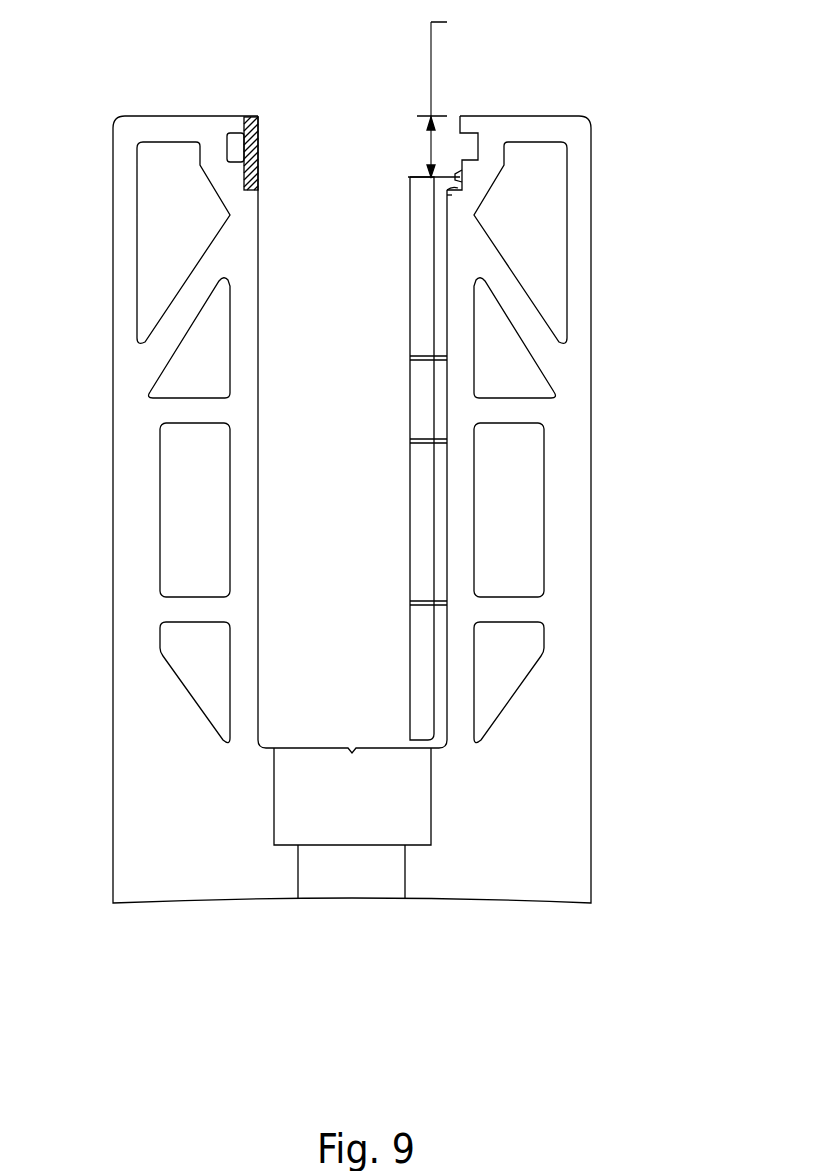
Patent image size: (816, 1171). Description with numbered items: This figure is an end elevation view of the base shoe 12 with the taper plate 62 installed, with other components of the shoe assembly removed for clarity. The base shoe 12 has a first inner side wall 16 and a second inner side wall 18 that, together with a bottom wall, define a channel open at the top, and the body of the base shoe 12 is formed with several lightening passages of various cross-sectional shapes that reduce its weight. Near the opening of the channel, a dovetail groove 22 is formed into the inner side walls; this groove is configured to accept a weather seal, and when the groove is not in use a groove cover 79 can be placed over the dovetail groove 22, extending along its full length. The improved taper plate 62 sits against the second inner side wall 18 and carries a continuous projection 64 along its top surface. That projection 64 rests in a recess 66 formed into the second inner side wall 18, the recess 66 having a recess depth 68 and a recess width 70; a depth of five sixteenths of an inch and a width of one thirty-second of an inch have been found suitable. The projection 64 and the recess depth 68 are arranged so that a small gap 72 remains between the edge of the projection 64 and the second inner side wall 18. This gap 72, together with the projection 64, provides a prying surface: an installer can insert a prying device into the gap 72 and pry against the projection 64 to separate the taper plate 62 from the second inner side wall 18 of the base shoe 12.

The base shoe 12 is at (522, 900).
The first inner side wall 16 is at (258, 325).
The second inner side wall 18 is at (445, 515).
The dovetail groove 22 is at (227, 147).
The taper plate 62 is at (445, 377).
The projection 64 is at (458, 180).
The recess 66 is at (458, 133).
The recess depth 68 is at (446, 95).
The recess width 70 is at (452, 195).
The gap 72 is at (458, 188).
The groove cover 79 is at (250, 116).